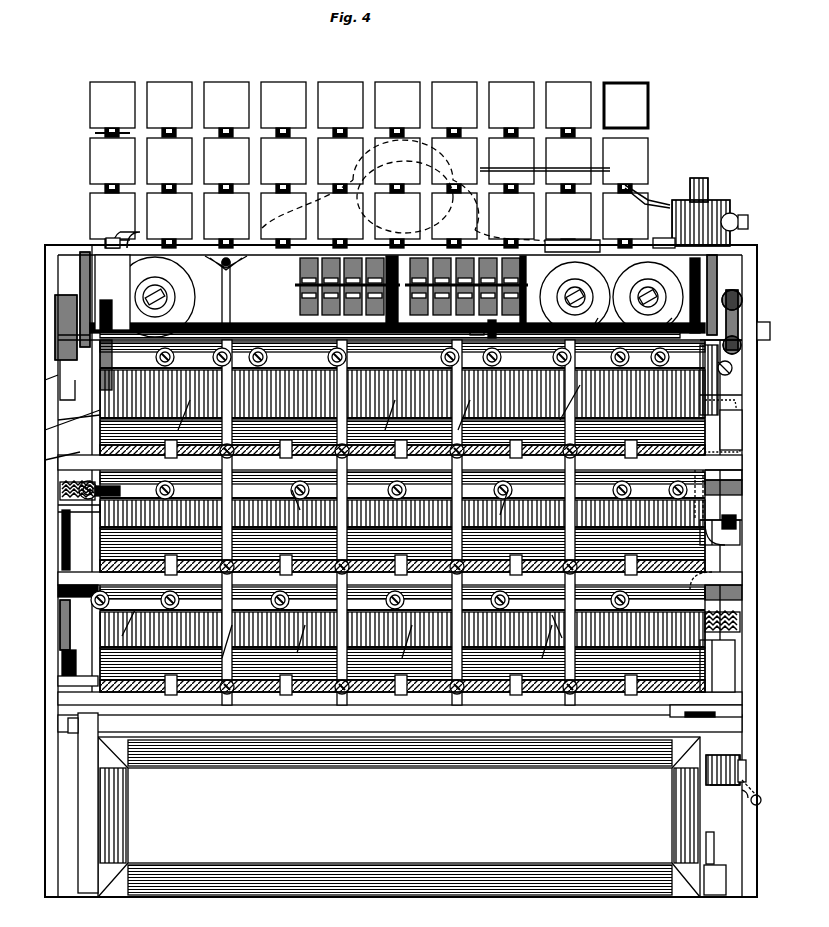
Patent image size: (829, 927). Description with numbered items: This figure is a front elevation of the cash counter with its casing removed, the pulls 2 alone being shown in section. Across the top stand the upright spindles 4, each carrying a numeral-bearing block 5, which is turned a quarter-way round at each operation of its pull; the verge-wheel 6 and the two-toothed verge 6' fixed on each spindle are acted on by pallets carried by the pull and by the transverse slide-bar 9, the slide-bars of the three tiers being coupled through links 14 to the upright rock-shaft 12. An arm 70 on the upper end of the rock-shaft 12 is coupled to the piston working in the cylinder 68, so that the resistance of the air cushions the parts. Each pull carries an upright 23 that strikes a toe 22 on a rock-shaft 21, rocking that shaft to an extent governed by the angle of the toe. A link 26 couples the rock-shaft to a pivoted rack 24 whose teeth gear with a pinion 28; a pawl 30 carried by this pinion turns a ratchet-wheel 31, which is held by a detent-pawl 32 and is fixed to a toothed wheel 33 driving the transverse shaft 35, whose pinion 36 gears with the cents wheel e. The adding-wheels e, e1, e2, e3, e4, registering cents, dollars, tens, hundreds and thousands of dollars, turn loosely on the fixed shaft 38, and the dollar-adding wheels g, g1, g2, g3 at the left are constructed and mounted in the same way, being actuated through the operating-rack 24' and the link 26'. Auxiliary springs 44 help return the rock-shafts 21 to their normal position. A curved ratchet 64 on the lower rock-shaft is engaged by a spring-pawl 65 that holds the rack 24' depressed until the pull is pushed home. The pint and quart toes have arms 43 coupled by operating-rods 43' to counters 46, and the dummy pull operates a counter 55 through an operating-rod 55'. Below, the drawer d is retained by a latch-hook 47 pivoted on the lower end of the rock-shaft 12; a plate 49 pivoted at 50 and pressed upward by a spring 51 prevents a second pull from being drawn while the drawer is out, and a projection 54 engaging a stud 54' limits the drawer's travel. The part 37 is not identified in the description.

The numeral-bearing block 5 is at (167, 88).
The upright spindle 4 is at (95, 134).
The cylinder 68 is at (385, 197).
The operating-rod 55' is at (120, 227).
The arm 70 is at (650, 192).
The upright rock-shaft 12 is at (711, 189).
The arm 43 is at (695, 396).
The bracket 37 is at (548, 245).
The counter 55 is at (155, 297).
The counter 46 is at (611, 297).
The transversely-arranged shaft 35 is at (599, 321).
The pinion 28 is at (670, 319).
The dollar-adding wheel g3 is at (306, 277).
The dollar-adding wheel g2 is at (329, 277).
The dollar-adding wheel g1 is at (351, 277).
The dollar-adding wheel g is at (375, 277).
The fixed shaft 38 is at (354, 291).
The thousands-of-dollars wheel e4 is at (418, 277).
The hundreds-of-dollars wheel e3 is at (441, 277).
The tens-of-dollars wheel e2 is at (464, 277).
The dollars wheel e1 is at (488, 277).
The cents wheel e is at (466, 283).
The pinion 36 is at (485, 322).
The operating-rack 24' is at (105, 299).
The link 26' is at (72, 377).
The rock-shaft 21 is at (760, 581).
The rack 24 is at (711, 295).
The ratchet-wheel 31 is at (736, 292).
The pawl 30 is at (743, 320).
The toothed wheel 33 is at (742, 348).
The detent-pawl 32 is at (724, 372).
The link 26 is at (721, 380).
The slide-bar 9 is at (742, 428).
The pull 2 is at (390, 522).
The upright 23 is at (402, 560).
The toe 22 is at (383, 507).
The verge-wheel 6 is at (397, 521).
The auxiliary spring 44 is at (60, 494).
The verge 6' is at (79, 537).
The operating-rod 43' is at (712, 530).
The link 14 is at (740, 524).
The curved ratchet 64 is at (68, 625).
The spring-pawl 65 is at (78, 668).
The latch-hook 47 is at (685, 712).
The drawer d is at (384, 805).
The plate 49 is at (723, 760).
The pivot 50 is at (746, 752).
The spring 51 is at (729, 792).
The stud 54' is at (723, 847).
The projection 54 is at (721, 872).